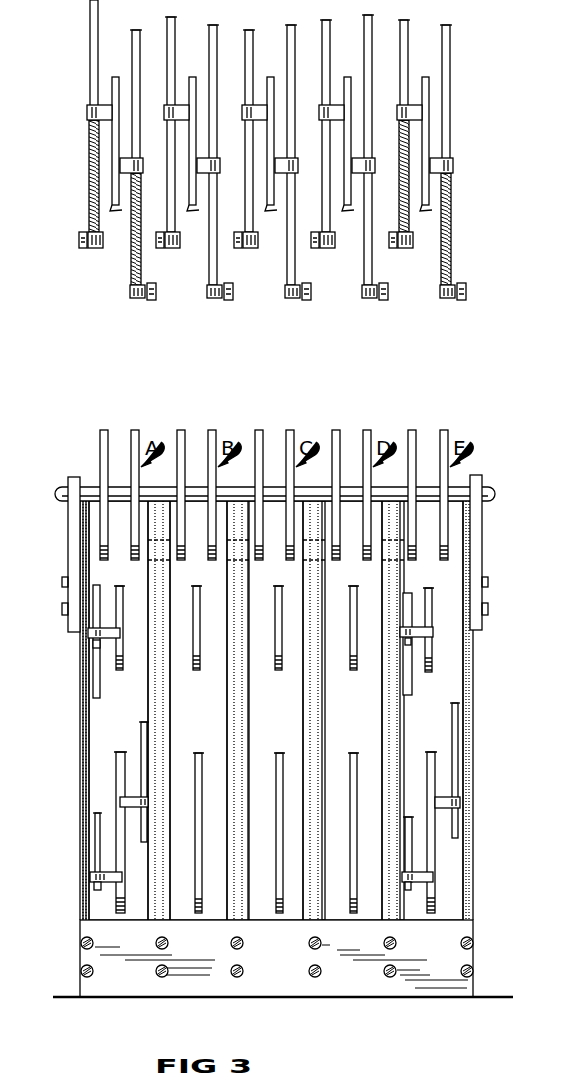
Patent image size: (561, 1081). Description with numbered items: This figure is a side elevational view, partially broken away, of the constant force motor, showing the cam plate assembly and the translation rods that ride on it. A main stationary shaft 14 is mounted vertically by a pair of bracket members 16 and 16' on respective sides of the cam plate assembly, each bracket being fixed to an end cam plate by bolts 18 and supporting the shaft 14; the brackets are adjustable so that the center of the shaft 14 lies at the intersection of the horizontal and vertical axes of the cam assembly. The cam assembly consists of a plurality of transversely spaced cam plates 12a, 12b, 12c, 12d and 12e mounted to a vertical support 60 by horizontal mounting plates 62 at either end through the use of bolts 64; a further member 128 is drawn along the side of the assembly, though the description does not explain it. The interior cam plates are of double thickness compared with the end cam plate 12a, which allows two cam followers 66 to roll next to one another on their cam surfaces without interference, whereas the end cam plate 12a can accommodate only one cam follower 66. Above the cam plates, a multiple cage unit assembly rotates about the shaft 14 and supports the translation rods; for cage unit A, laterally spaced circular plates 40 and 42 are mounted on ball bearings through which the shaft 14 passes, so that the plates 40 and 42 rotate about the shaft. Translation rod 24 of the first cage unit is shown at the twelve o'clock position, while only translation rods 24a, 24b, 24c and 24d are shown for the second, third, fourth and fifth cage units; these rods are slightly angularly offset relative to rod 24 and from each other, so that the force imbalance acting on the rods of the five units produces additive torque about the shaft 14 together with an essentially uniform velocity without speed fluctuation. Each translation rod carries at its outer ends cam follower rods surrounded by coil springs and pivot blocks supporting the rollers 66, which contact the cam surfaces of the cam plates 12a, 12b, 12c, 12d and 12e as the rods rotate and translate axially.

The translation rod 24 is at (100, 456).
The translation rod 24a is at (195, 212).
The translation rod 24b is at (273, 212).
The translation rod 24c is at (350, 212).
The translation rod 24d is at (430, 212).
The cam follower 66 is at (81, 245).
The circular plate 40 is at (103, 440).
The circular plate 42 is at (140, 438).
The main stationary shaft 14 is at (453, 495).
The bracket member 16 is at (488, 552).
The bracket member 16' is at (61, 554).
The bolt 18 is at (488, 607).
The frame side member 128 is at (470, 701).
The end cam plate 12a is at (88, 711).
The cam plate 12b is at (164, 708).
The cam plate 12c is at (243, 708).
The cam plate 12d is at (318, 708).
The cam plate 12e is at (395, 710).
The horizontal mounting plate 62 is at (437, 940).
The bolt 64 is at (470, 943).
The vertical support 60 is at (503, 997).